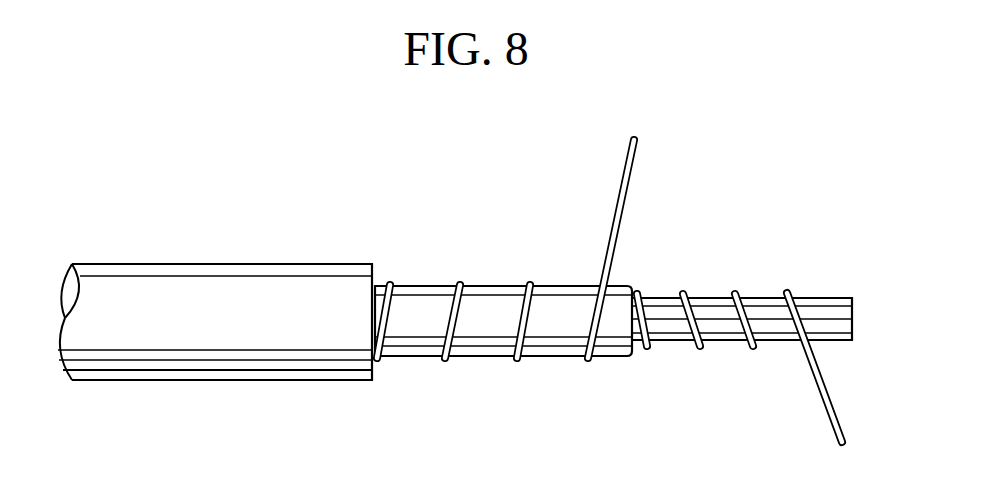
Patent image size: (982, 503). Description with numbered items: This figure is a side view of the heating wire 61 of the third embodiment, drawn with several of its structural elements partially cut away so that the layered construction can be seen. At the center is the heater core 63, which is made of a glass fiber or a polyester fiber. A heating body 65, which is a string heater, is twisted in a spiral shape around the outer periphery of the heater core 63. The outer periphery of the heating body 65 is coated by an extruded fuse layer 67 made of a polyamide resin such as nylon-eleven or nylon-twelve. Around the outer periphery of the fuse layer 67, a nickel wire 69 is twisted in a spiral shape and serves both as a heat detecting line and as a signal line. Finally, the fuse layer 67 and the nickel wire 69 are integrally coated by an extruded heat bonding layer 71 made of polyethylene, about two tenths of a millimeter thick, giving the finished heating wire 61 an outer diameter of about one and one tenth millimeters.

The heating wire 61 is at (438, 249).
The heater core 63 is at (828, 297).
The heating body 65 is at (825, 412).
The fuse layer 67 is at (617, 346).
The nickel wire 69 is at (618, 254).
The heat bonding layer 71 is at (336, 368).